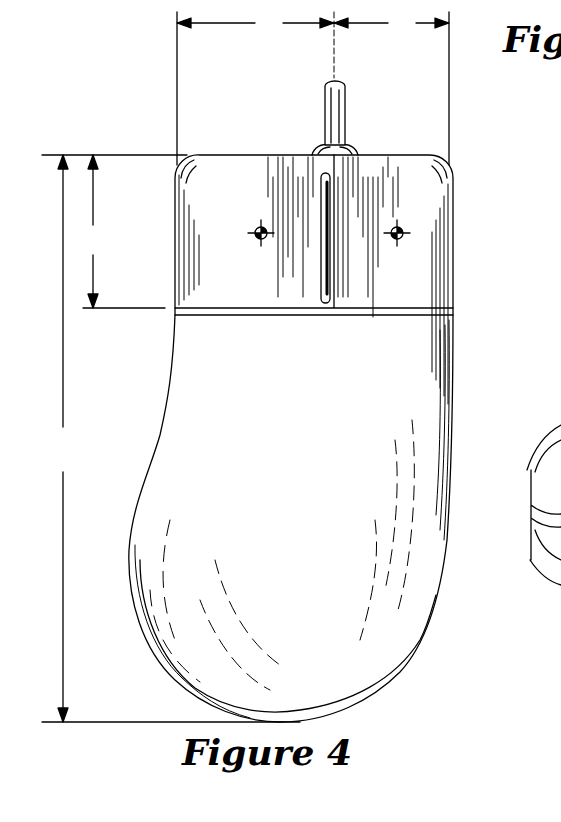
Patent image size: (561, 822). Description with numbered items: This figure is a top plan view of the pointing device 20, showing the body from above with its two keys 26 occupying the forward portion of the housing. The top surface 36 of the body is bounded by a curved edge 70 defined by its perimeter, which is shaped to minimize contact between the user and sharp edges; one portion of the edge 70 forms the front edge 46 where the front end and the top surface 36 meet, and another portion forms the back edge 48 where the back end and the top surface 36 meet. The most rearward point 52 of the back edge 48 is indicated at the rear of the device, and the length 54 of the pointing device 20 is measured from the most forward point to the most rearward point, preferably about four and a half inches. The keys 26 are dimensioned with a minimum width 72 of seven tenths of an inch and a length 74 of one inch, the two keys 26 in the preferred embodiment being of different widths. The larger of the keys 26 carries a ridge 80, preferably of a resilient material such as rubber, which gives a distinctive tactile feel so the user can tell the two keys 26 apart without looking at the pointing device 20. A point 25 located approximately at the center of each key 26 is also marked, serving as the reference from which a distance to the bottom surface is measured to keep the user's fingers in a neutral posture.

The pointing device 20 is at (171, 125).
The point 25 is at (259, 228).
The keys 26 is at (233, 285).
The top surface 36 is at (360, 485).
The front edge 46 is at (407, 155).
The back edge 48 is at (380, 688).
The most rearward point 52 is at (285, 721).
The length 54 is at (171, 438).
The edge 70 is at (453, 407).
The minimum width 72 is at (313, 88).
The length 74 is at (122, 231).
The ridge 80 is at (322, 281).